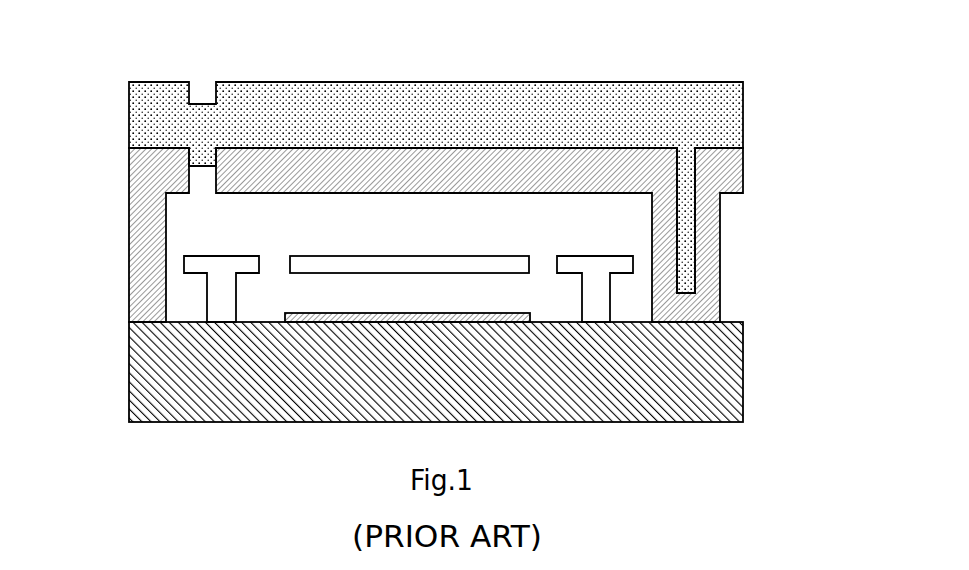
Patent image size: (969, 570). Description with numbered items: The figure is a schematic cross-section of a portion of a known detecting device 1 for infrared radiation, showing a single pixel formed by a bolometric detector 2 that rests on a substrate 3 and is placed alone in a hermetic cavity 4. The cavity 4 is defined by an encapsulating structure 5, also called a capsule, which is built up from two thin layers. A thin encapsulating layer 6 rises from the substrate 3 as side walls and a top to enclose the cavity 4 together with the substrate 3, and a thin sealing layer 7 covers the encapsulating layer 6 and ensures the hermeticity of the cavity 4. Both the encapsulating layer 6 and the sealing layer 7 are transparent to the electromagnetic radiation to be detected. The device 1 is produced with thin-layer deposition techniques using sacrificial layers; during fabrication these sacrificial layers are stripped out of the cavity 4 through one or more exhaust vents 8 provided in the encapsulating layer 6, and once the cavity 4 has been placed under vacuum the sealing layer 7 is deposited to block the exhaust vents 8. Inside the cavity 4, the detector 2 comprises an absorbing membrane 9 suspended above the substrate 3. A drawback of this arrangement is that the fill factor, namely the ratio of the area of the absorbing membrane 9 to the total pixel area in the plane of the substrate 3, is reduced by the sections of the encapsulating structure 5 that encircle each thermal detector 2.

The detecting device 1 is at (722, 57).
The bolometric detector 2 is at (610, 248).
The substrate 3 is at (750, 333).
The hermetic cavity 4 is at (318, 229).
The encapsulating structure 5 is at (104, 157).
The encapsulating layer 6 is at (128, 225).
The sealing layer 7 is at (128, 108).
The exhaust vent 8 is at (205, 155).
The absorbing membrane 9 is at (410, 256).